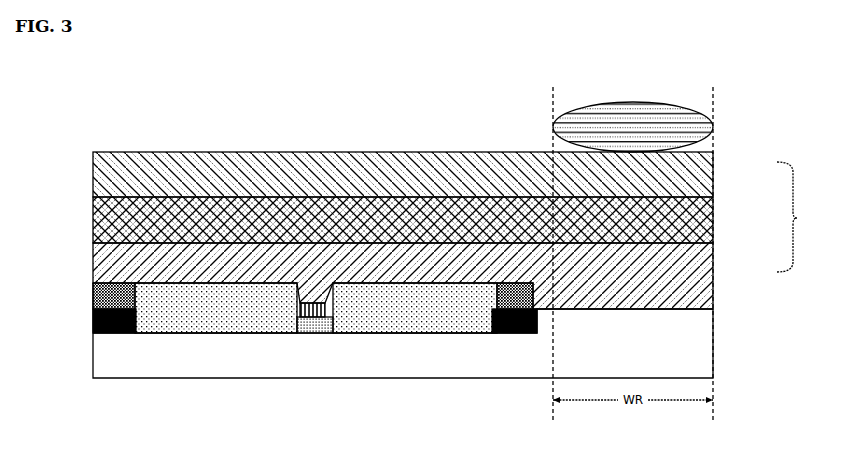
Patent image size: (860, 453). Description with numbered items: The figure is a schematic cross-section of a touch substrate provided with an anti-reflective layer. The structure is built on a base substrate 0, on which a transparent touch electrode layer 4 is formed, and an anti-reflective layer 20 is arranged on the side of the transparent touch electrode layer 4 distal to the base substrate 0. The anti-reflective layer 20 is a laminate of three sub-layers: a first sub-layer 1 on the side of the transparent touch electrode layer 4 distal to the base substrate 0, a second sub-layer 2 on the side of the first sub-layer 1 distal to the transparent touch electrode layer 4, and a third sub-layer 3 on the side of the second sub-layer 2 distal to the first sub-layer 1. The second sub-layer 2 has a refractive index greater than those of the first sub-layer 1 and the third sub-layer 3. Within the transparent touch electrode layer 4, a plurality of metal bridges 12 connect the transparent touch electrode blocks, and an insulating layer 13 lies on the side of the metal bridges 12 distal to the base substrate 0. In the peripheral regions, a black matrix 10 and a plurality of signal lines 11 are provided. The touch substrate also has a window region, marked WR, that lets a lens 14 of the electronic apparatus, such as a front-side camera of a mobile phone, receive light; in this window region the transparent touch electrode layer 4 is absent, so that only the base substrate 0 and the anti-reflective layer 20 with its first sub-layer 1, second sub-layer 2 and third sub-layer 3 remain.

The base substrate 0 is at (713, 355).
The first sub-layer 1 is at (713, 273).
The second sub-layer 2 is at (713, 220).
The third sub-layer 3 is at (713, 176).
The transparent touch electrode layer 4 is at (218, 307).
The black matrix 10 is at (93, 321).
The signal lines 11 is at (93, 296).
The metal bridges 12 is at (313, 325).
The insulating layer 13 is at (316, 312).
The lens 14 is at (713, 128).
The anti-reflective layer 20 is at (797, 218).